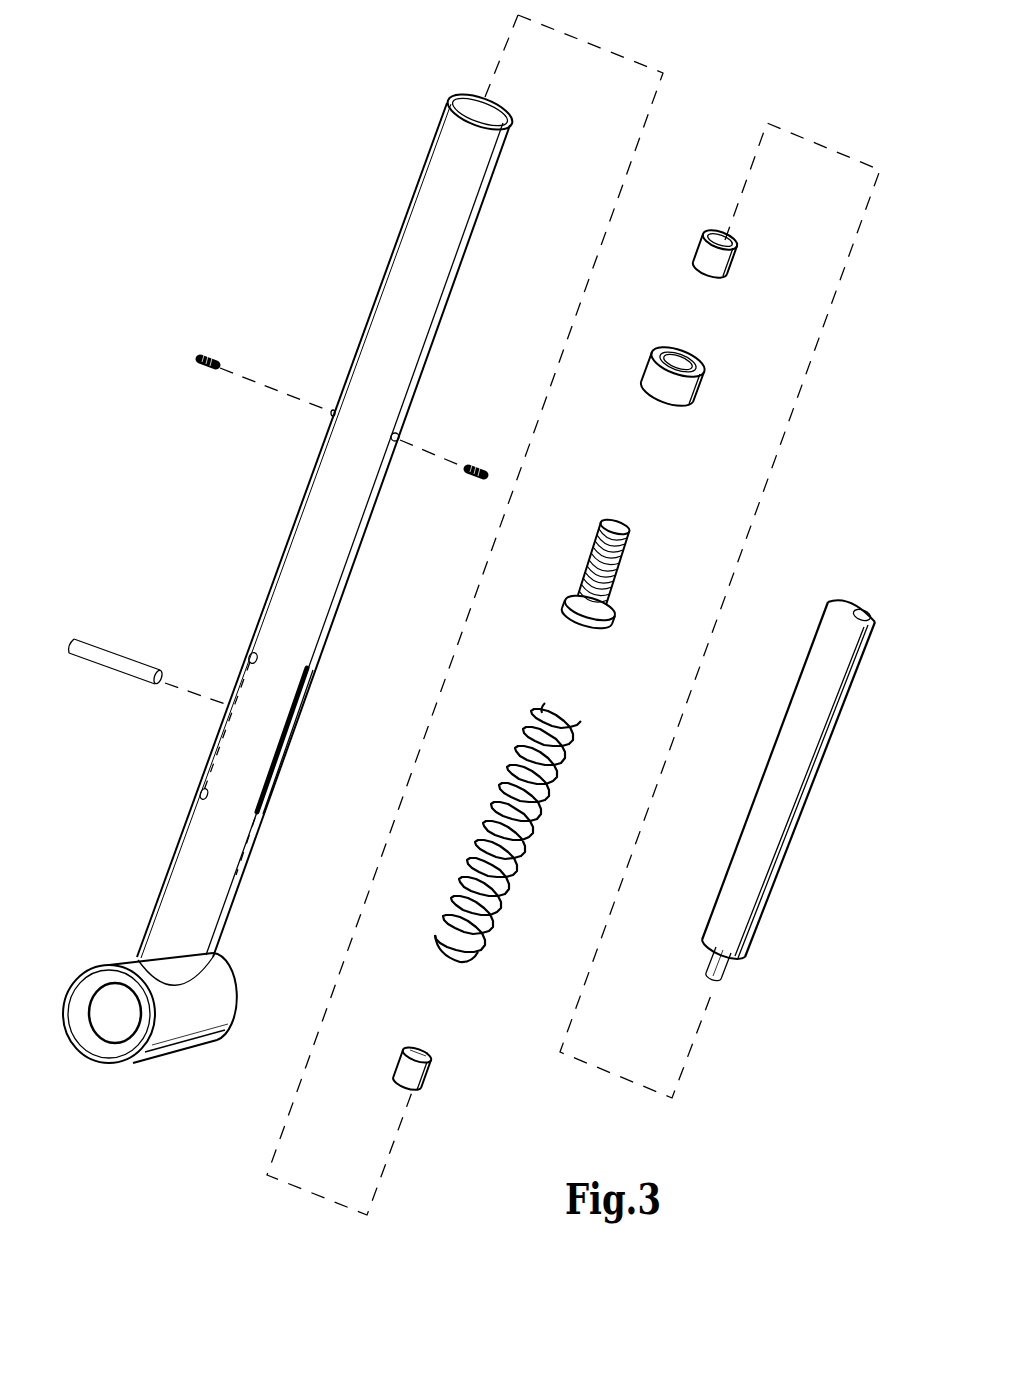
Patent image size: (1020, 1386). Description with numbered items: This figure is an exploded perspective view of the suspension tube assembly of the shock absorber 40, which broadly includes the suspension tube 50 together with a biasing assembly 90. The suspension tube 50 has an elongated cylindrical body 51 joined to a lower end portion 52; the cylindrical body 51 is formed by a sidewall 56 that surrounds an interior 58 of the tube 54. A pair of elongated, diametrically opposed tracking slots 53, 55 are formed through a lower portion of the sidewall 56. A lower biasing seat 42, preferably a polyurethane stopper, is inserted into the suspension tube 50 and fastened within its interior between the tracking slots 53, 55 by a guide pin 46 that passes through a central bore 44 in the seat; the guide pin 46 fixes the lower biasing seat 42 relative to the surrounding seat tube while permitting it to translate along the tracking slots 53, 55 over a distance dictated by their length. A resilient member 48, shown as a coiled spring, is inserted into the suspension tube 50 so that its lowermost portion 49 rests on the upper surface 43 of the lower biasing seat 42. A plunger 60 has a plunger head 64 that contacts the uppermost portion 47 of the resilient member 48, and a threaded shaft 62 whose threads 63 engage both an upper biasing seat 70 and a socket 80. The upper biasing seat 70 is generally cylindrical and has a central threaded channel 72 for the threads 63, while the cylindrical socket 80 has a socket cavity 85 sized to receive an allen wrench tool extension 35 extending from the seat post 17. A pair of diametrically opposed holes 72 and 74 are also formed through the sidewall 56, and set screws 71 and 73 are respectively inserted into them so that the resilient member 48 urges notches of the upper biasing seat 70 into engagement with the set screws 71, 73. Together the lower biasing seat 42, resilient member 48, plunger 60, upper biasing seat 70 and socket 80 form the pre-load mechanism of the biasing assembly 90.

The seat post 17 is at (788, 799).
The allen wrench tool extension 35 is at (728, 975).
The shock absorber 40 is at (150, 458).
The lower biasing seat 42 is at (430, 1065).
The upper surface 43 is at (420, 1053).
The central bore 44 is at (400, 1068).
The guide pin 46 is at (130, 676).
The uppermost portion 47 is at (545, 700).
The resilient member 48 is at (531, 834).
The lowermost portion 49 is at (458, 965).
The suspension tube 50 is at (334, 560).
The elongated cylindrical body 51 is at (333, 579).
The lower end portion 52 is at (218, 985).
The tracking slot 53 is at (250, 655).
The tube 54 is at (451, 131).
The tracking slot 55 is at (250, 785).
The sidewall 56 is at (466, 276).
The interior 58 is at (503, 108).
The plunger 60 is at (609, 586).
The threaded shaft 62 is at (600, 530).
The threads 63 is at (580, 586).
The plunger head 64 is at (596, 632).
The upper biasing seat 70 is at (720, 383).
The set screw 71 is at (204, 356).
The threaded channel / hole 72 is at (332, 413).
The set screw 73 is at (470, 480).
The hole 74 is at (400, 436).
The socket 80 is at (751, 239).
The socket cavity 85 is at (731, 236).
The biasing assembly 90 is at (570, 395).